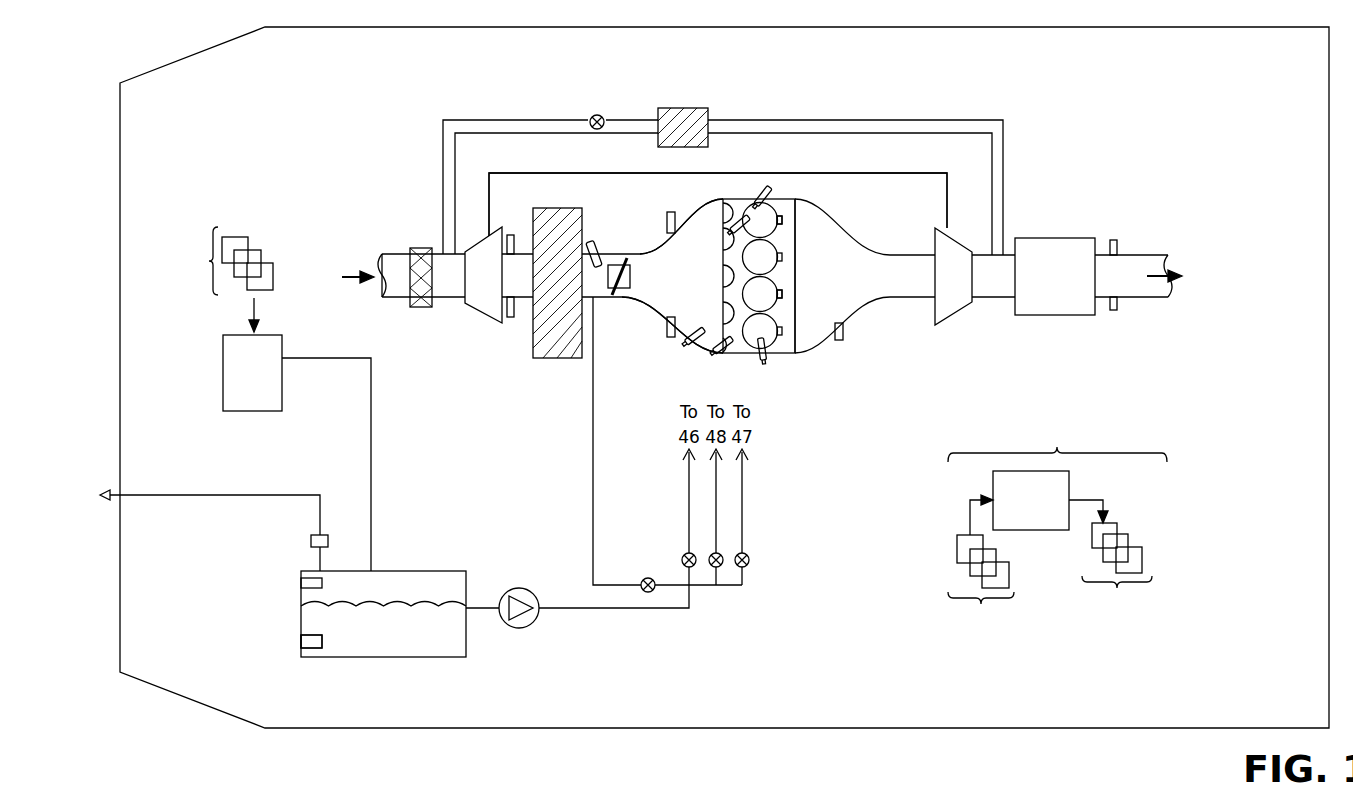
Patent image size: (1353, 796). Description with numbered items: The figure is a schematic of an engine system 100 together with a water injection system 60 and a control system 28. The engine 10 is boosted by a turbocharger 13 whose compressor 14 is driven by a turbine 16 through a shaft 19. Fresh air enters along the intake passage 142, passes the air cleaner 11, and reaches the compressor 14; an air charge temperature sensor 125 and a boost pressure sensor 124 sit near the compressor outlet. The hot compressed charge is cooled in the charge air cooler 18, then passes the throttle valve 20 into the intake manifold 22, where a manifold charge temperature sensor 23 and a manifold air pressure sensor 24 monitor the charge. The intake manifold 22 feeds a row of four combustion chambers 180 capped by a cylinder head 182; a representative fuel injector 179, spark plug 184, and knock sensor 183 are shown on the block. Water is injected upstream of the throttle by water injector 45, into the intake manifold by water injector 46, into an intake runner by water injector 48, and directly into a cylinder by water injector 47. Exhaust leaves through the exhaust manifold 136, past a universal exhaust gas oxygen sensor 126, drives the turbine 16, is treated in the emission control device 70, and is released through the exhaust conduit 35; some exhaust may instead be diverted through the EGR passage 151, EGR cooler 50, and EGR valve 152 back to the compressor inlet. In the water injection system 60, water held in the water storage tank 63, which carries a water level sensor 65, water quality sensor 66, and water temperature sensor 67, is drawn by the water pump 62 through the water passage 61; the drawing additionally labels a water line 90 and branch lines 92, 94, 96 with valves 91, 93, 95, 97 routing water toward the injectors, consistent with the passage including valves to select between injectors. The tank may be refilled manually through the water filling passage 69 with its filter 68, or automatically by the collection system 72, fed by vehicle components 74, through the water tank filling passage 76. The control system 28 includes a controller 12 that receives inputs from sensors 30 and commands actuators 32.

The engine system 100 is at (1086, 78).
The engine 10 is at (737, 186).
The air cleaner 11 is at (416, 248).
The controller 12 is at (1021, 509).
The turbocharger 13 is at (522, 160).
The compressor 14 is at (492, 286).
The turbine 16 is at (963, 286).
The charge air cooler 18 is at (560, 208).
The shaft 19 is at (878, 173).
The throttle valve 20 is at (630, 280).
The intake manifold 22 is at (699, 286).
The manifold charge temperature sensor 23 is at (667, 222).
The manifold air pressure sensor 24 is at (667, 325).
The control system 28 is at (1057, 429).
The sensors 30 is at (982, 572).
The actuators 32 is at (1117, 566).
The exhaust conduit 35 is at (1160, 255).
The water injector 45 is at (592, 241).
The water injector 46 is at (688, 343).
The water injector 47 is at (735, 235).
The water injector 48 is at (716, 352).
The EGR cooler 50 is at (692, 108).
The water injection system 60 is at (500, 686).
The water passage 61 is at (580, 608).
The water pump 62 is at (535, 595).
The water storage tank 63 is at (445, 571).
The water level sensor 65 is at (301, 583).
The water quality sensor 66 is at (301, 638).
The water temperature sensor 67 is at (301, 648).
The filter 68 is at (328, 541).
The water filling passage 69 is at (240, 495).
The emission control device 70 is at (1048, 238).
The collection system 72 is at (262, 382).
The components 74 is at (209, 261).
The water tank filling passage 76 is at (371, 460).
The water line 90 is at (593, 470).
The valve 91 is at (643, 580).
The water line to injector 46 92 is at (689, 470).
The valve 93 is at (683, 555).
The water line to injector 48 94 is at (716, 500).
The valve 95 is at (710, 555).
The water line to injector 47 96 is at (742, 470).
The valve 97 is at (748, 555).
The boost pressure sensor 124 is at (512, 317).
The air charge temperature sensor 125 is at (510, 235).
The universal exhaust gas oxygen sensor 126 is at (843, 331).
The exhaust manifold 136 is at (878, 286).
The intake passage 142 is at (390, 300).
The EGR passage 151 is at (790, 120).
The EGR valve 152 is at (603, 115).
The fuel injector 179 is at (772, 185).
The combustion chambers 180 is at (783, 222).
The cylinder head 182 is at (795, 258).
The knock sensors 183 is at (783, 295).
The spark plugs 184 is at (766, 360).